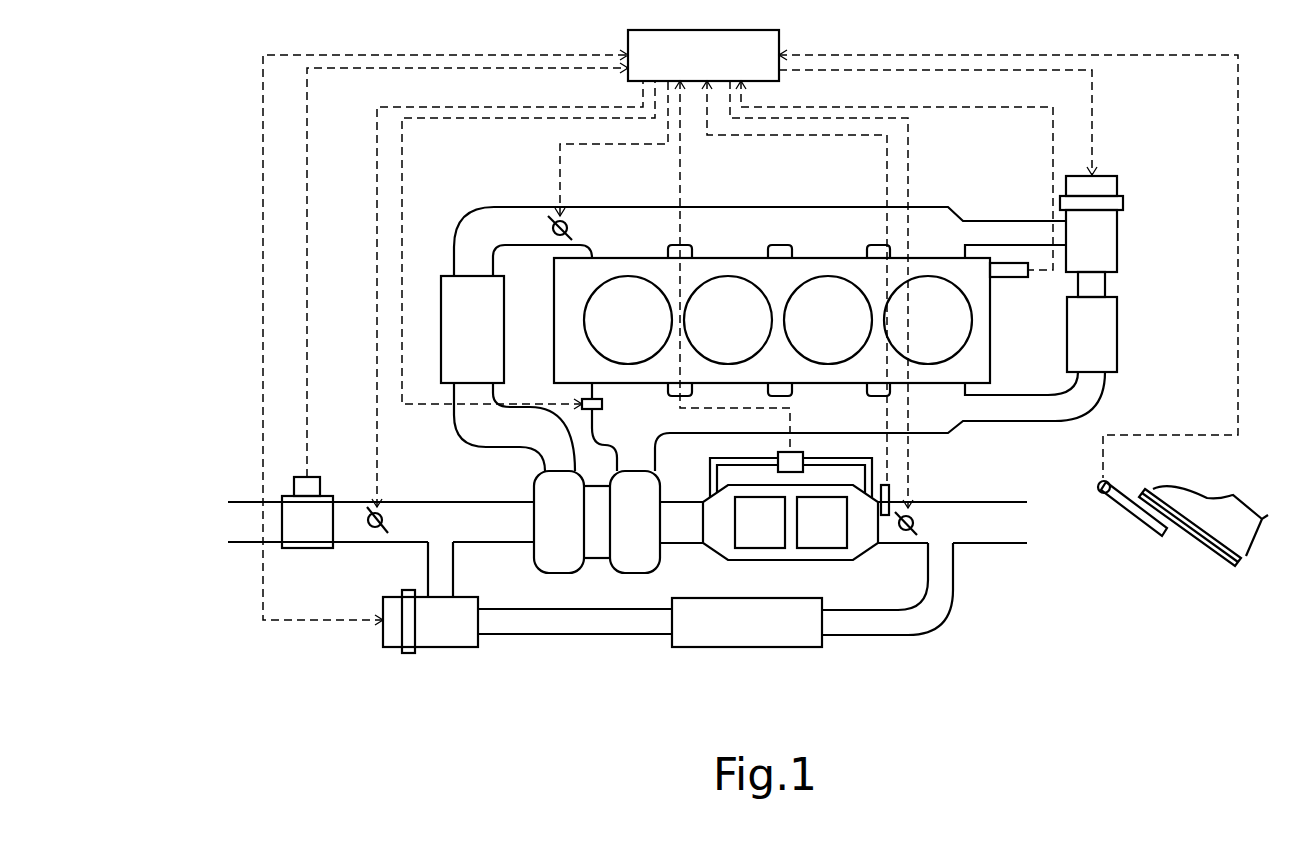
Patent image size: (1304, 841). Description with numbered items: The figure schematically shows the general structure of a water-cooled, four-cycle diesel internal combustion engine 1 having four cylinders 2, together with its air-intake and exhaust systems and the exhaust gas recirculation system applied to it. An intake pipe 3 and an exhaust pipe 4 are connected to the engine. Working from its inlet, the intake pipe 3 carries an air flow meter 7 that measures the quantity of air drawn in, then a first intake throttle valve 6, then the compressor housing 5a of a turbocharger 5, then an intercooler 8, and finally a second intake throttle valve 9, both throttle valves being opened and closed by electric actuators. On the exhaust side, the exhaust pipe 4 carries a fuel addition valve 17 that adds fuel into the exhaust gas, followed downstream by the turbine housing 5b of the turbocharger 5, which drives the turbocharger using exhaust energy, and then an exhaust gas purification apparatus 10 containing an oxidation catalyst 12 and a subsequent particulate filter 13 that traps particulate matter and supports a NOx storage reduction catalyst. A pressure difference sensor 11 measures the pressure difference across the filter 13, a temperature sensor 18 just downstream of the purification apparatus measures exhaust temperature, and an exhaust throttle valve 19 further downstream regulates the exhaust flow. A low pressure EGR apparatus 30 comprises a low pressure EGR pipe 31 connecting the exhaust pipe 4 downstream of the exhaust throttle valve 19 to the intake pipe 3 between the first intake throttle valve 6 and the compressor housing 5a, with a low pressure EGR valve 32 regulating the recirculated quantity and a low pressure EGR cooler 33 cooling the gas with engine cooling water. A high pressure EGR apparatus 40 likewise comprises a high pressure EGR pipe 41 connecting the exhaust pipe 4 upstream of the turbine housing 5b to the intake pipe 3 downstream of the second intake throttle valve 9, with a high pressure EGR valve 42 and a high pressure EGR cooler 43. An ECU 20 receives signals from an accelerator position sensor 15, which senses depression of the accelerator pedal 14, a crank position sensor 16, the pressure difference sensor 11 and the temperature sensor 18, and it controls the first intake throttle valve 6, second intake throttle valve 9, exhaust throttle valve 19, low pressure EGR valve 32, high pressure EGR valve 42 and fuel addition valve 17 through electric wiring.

The internal combustion engine 1 is at (474, 182).
The cylinder 2 is at (637, 277).
The intake pipe 3 is at (598, 207).
The exhaust pipe 4 is at (700, 433).
The turbocharger 5 is at (593, 571).
The compressor housing 5a is at (555, 573).
The turbine housing 5b is at (630, 573).
The first intake throttle valve 6 is at (375, 535).
The air flow meter 7 is at (322, 488).
The intercooler 8 is at (441, 310).
The second intake throttle valve 9 is at (552, 240).
The exhaust gas purification apparatus 10 is at (785, 541).
The pressure difference sensor 11 is at (803, 457).
The oxidation catalyst 12 is at (748, 548).
The particulate filter 13 is at (820, 548).
The accelerator pedal 14 is at (1180, 535).
The accelerator position sensor 15 is at (1108, 480).
The crank position sensor 16 is at (1018, 280).
The fuel addition valve 17 is at (582, 403).
The temperature sensor 18 is at (893, 493).
The exhaust throttle valve 19 is at (900, 537).
The ECU 20 is at (628, 45).
The low pressure EGR apparatus 30 is at (344, 652).
The low pressure EGR pipe 31 is at (850, 637).
The low pressure EGR valve 32 is at (428, 648).
The low pressure EGR cooler 33 is at (745, 648).
The high pressure EGR apparatus 40 is at (1123, 259).
The high pressure EGR pipe 41 is at (1018, 422).
The high pressure EGR valve 42 is at (1117, 222).
The high pressure EGR cooler 43 is at (1117, 360).